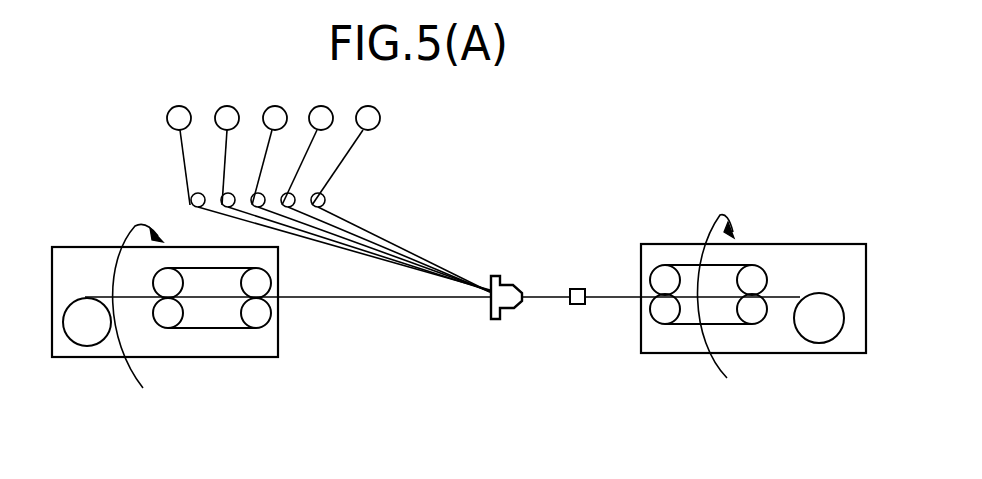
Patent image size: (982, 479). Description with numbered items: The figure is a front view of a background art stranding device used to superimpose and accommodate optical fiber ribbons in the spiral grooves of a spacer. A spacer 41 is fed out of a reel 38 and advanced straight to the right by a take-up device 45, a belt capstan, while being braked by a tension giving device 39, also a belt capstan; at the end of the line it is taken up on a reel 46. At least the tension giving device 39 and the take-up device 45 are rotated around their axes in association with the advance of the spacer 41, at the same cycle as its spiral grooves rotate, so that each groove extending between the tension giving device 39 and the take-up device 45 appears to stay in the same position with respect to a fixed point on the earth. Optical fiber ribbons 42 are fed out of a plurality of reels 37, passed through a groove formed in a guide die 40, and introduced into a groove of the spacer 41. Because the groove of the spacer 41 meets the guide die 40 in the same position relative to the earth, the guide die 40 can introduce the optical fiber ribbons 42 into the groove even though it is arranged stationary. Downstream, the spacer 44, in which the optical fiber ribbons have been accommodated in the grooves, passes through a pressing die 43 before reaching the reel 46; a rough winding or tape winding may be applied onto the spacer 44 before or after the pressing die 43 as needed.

The reels 37 is at (380, 116).
The reel 38 is at (87, 347).
The tension giving device 39 is at (215, 329).
The guide die 40 is at (514, 284).
The spacer 41 is at (395, 298).
The optical fiber ribbons 42 is at (404, 249).
The pressing die 43 is at (578, 288).
The spacer 44 is at (607, 298).
The take-up device 45 is at (727, 264).
The reel 46 is at (820, 306).